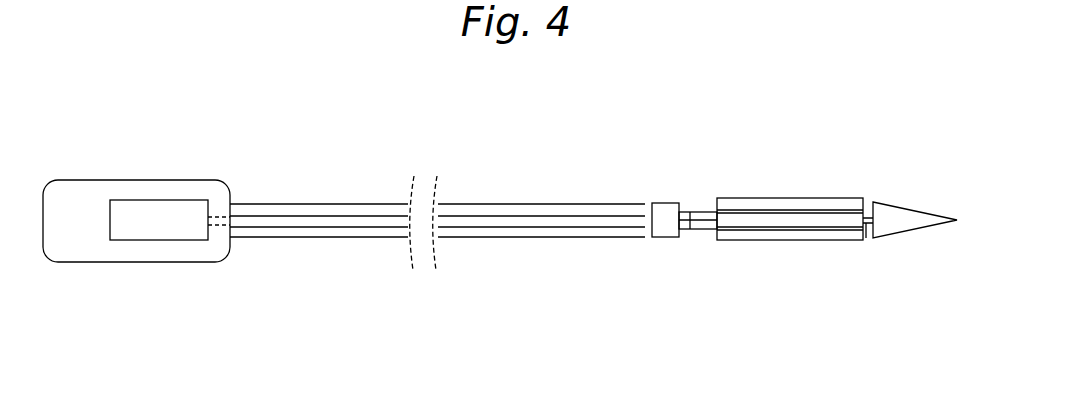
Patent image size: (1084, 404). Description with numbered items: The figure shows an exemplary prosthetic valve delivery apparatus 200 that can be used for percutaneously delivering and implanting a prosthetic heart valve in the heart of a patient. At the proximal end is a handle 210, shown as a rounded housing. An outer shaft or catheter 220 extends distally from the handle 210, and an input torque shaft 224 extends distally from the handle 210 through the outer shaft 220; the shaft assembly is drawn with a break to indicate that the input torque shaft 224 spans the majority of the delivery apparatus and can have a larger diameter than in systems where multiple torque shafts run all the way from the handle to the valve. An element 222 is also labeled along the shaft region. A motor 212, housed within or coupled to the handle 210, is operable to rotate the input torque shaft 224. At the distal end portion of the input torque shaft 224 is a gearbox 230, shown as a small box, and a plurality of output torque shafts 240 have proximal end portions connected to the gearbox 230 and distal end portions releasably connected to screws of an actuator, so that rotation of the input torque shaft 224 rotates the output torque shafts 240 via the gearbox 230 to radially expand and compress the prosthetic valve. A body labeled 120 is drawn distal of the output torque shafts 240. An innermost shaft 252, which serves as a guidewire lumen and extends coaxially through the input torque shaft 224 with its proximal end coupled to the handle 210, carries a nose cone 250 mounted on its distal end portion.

The prosthetic valve delivery apparatus 200 is at (379, 160).
The handle 210 is at (120, 262).
The motor 212 is at (140, 200).
The outer shaft 220 is at (282, 238).
The outer tube 222 is at (258, 204).
The input torque shaft 224 is at (336, 204).
The gearbox 230 is at (664, 237).
The output torque shaft 240 is at (699, 212).
The implant body 120 is at (772, 198).
The nose cone 250 is at (890, 212).
The innermost shaft 252 is at (867, 226).